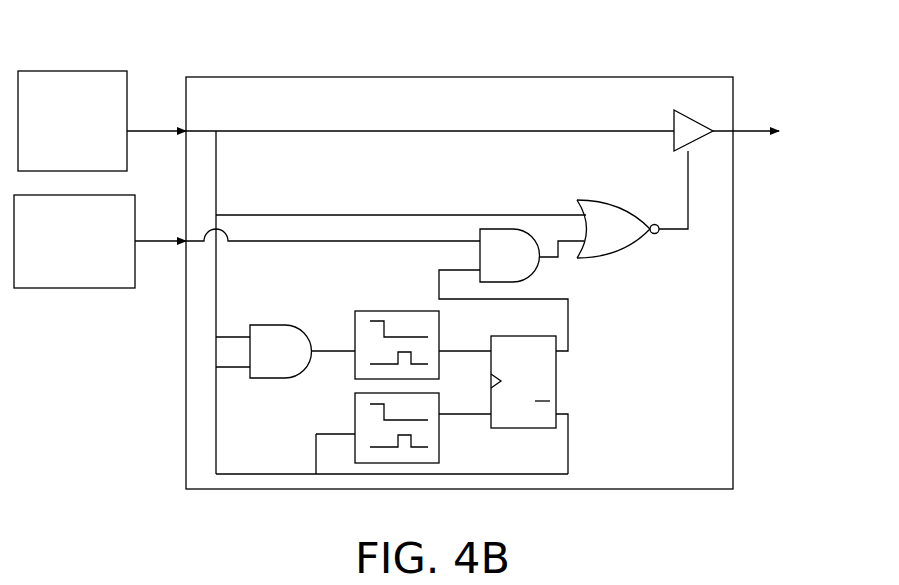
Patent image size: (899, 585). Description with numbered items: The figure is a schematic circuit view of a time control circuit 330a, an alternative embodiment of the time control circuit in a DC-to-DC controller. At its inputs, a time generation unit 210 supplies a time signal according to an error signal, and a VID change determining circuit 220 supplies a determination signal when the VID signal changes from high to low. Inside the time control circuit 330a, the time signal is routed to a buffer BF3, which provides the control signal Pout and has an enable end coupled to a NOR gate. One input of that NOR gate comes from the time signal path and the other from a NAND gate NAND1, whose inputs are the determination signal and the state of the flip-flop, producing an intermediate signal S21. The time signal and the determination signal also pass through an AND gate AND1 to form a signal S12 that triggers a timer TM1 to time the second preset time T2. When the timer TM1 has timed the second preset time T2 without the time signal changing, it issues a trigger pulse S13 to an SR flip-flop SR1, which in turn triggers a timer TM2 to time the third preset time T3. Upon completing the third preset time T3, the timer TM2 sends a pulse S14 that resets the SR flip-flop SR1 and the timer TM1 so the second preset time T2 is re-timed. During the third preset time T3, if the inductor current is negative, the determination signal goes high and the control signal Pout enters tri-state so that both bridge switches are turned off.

The time generation unit 210 is at (72, 62).
The VID change determining circuit 220 is at (74, 290).
The time control circuit 330a is at (618, 76).
The AND gate AND1 is at (278, 323).
The NAND gate NAND1 is at (480, 259).
The timer TM1 is at (397, 330).
The timer TM2 is at (355, 428).
The second preset time T2 is at (380, 354).
The third preset time T3 is at (353, 416).
The SR flip-flop SR1 is at (556, 385).
The buffer BF3 is at (699, 122).
The signal S12 is at (334, 338).
The signal S13 is at (465, 336).
The signal S14 is at (465, 399).
The signal S21 is at (616, 204).
The control signal Pout is at (770, 132).